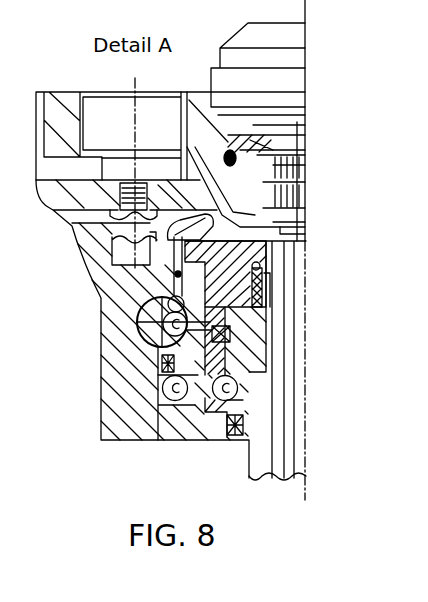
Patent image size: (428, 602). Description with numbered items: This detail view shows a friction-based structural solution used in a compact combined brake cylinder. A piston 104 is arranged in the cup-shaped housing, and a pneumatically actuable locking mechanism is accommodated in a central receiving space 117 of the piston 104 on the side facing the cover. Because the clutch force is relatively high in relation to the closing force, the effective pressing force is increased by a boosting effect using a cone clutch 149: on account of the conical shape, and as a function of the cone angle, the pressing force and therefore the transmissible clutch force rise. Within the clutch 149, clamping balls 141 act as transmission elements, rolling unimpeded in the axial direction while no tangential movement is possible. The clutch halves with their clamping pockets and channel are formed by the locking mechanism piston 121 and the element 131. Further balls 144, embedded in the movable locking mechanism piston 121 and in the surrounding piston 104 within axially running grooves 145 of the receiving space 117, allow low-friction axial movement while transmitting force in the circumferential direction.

The piston 104 is at (101, 356).
The central receiving space 117 is at (148, 386).
The locking mechanism piston 121 is at (238, 358).
The element forming clutch half 131 is at (262, 272).
The clamping ball 141 is at (258, 318).
The ball 144 is at (168, 402).
The axially running groove 145 is at (222, 402).
The cone clutch 149 is at (138, 321).